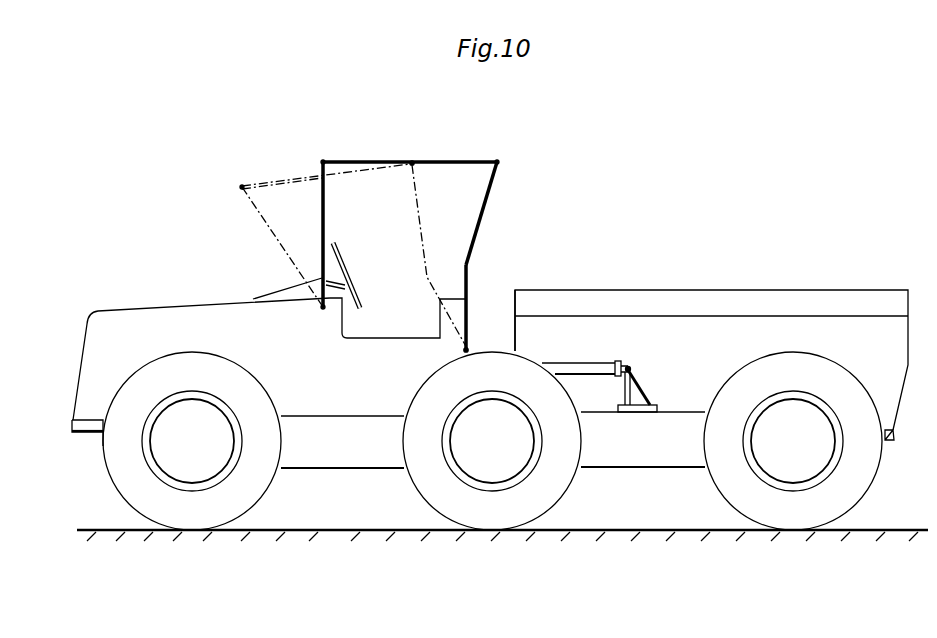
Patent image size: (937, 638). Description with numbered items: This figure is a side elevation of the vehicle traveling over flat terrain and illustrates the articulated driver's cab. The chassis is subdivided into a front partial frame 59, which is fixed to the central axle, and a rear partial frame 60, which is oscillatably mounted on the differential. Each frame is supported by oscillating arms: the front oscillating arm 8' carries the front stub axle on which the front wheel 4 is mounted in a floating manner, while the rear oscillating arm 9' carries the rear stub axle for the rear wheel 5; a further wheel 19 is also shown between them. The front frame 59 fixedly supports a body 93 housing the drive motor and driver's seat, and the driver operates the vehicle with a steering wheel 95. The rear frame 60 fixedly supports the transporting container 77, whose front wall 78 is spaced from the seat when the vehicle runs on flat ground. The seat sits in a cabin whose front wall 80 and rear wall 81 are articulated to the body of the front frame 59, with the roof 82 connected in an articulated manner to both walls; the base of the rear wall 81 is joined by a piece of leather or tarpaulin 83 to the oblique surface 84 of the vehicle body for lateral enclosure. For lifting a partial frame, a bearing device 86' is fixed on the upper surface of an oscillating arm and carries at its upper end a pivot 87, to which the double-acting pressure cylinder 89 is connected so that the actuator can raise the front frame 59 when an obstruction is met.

The front wheel 4 is at (127, 487).
The rear wheel 5 is at (866, 472).
The middle wheel 19 is at (563, 497).
The front oscillating arm 8' is at (342, 463).
The rear oscillating arm 9' is at (643, 459).
The front partial frame 59 is at (83, 436).
The rear partial frame 60 is at (896, 438).
The transporting container 77 is at (795, 300).
The front wall of container 78 is at (521, 300).
The front wall of cabin 80 is at (270, 228).
The rear wall of cabin 81 is at (478, 232).
The roof 82 is at (431, 160).
The piece of leather or tarpaulin 83 is at (455, 313).
The oblique surface 84 is at (458, 336).
The bearing device 86' is at (653, 391).
The pivot 87 is at (632, 368).
The pressure cylinder 89 is at (583, 369).
The body 93 is at (146, 308).
The steering wheel 95 is at (346, 278).